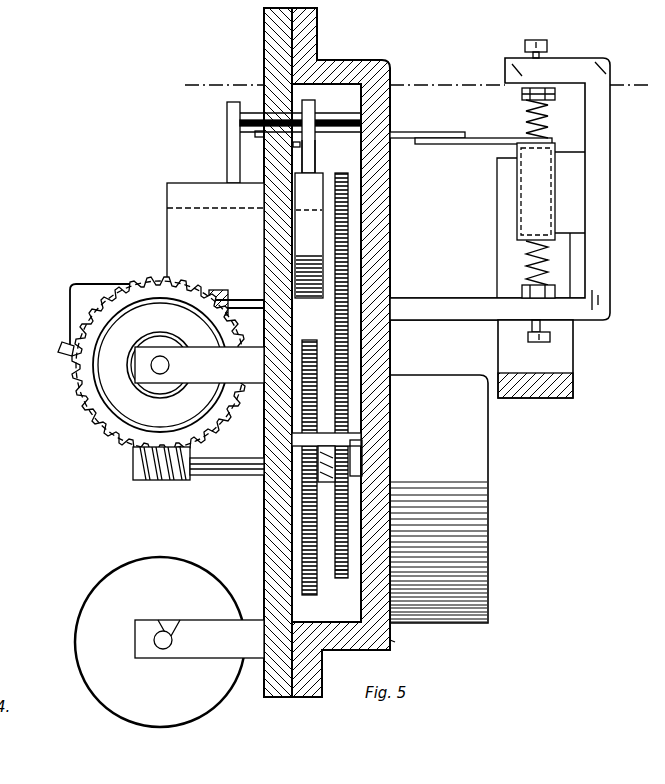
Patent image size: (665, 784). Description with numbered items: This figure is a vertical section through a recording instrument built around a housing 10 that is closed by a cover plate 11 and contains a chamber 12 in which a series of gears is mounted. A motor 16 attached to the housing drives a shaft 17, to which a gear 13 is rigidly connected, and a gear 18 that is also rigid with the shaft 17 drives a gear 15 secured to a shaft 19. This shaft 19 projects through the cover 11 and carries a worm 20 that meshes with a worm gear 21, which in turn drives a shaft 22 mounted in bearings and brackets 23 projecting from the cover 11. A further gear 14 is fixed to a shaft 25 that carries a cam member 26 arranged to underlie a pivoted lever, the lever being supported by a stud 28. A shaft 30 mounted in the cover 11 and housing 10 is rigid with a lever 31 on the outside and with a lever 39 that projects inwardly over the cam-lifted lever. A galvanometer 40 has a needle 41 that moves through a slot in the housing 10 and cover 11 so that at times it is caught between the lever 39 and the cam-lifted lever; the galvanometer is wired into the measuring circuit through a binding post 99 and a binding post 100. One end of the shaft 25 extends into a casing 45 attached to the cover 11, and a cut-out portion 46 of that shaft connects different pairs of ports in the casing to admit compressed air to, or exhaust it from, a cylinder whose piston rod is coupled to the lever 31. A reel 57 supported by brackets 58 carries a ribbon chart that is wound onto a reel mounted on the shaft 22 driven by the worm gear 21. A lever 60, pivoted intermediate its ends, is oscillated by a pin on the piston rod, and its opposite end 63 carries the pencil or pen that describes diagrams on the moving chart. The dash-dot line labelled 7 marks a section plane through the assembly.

The section line 7- 7 is at (413, 87).
The housing 10 is at (384, 641).
The cover plate 11 is at (266, 33).
The chamber 12 is at (335, 624).
The gear 13 is at (348, 580).
The gear 14 is at (350, 248).
The gear 15 is at (300, 533).
The motor 16 is at (474, 472).
The shaft 17 is at (393, 420).
The gear 18 is at (300, 403).
The shaft 19 is at (246, 472).
The worm 20 is at (160, 482).
The worm gear 21 is at (114, 417).
The shaft 22 is at (160, 375).
The bearings and brackets 23 is at (212, 375).
The shaft 25 is at (350, 212).
The cam member 26 is at (305, 238).
The stud 28 is at (307, 149).
The shaft 30 is at (247, 128).
The lever 31 is at (228, 129).
The lever 39 is at (310, 108).
The galvanometer 40 is at (547, 200).
The needle 41 is at (400, 136).
The casing 45 is at (167, 195).
The cut-out portion 46 is at (172, 237).
The reel 57 is at (110, 605).
The brackets 58 is at (147, 662).
The lever 60 is at (70, 290).
The pen end of lever 63 is at (63, 352).
The binding post 99 is at (548, 49).
The binding post 100 is at (548, 300).